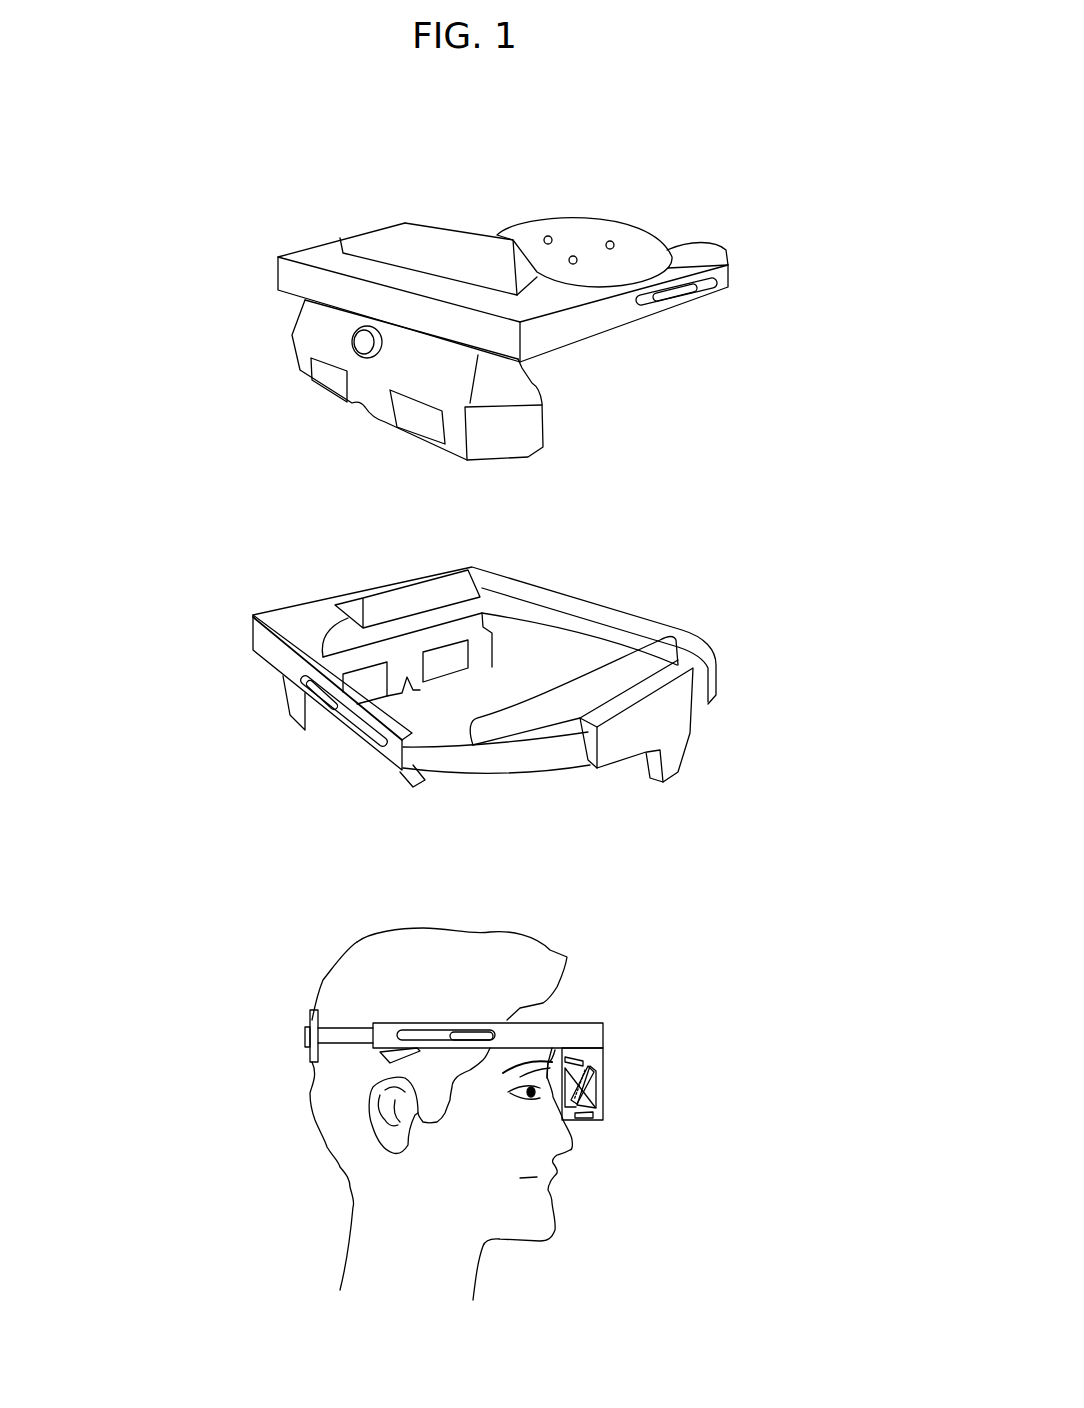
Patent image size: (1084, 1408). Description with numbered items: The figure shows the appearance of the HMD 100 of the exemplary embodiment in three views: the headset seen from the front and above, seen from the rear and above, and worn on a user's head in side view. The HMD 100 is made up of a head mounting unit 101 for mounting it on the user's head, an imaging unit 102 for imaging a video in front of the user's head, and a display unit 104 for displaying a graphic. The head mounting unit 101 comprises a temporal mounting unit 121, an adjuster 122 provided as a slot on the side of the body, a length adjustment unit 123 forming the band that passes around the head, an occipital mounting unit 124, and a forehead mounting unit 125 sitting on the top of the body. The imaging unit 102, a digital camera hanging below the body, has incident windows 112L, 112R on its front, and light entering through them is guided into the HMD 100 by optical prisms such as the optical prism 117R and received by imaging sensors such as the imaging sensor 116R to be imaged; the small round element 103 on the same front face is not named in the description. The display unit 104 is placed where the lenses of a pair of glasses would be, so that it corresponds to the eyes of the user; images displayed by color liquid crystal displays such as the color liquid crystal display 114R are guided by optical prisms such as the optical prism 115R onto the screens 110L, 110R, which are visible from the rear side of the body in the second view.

The HMD 100 is at (320, 162).
The head mounting unit 101 is at (660, 148).
The imaging unit 102 is at (707, 1065).
The camera 103 is at (352, 340).
The display unit 104 is at (707, 990).
The screen 110L is at (378, 688).
The screen 110R is at (462, 658).
The incident window 112L is at (418, 425).
The incident window 112R is at (328, 385).
The color liquid crystal display 114R is at (585, 1027).
The optical prism 115R is at (587, 1066).
The imaging sensor 116R is at (594, 1118).
The optical prism 117R is at (592, 1086).
The temporal mounting unit 121 is at (594, 322).
The adjuster 122 is at (672, 300).
The length adjustment unit 123 is at (702, 247).
The occipital mounting unit 124 is at (577, 217).
The forehead mounting unit 125 is at (412, 222).